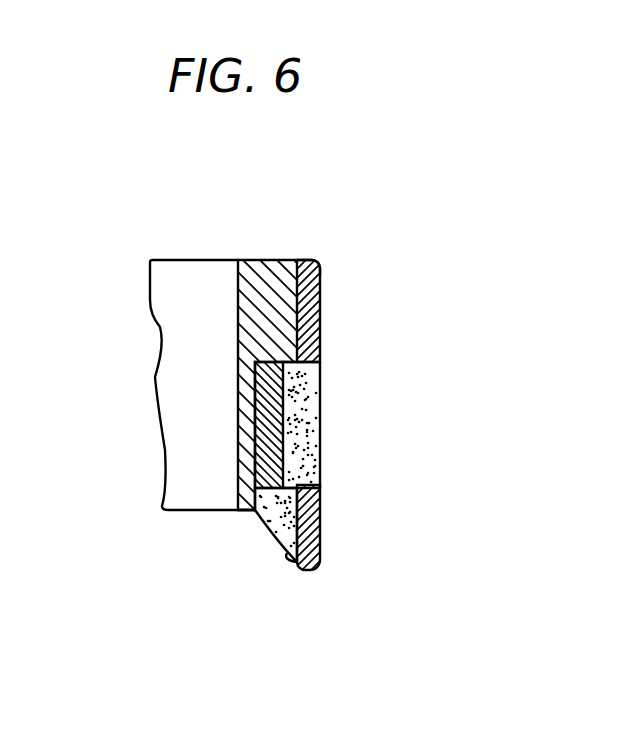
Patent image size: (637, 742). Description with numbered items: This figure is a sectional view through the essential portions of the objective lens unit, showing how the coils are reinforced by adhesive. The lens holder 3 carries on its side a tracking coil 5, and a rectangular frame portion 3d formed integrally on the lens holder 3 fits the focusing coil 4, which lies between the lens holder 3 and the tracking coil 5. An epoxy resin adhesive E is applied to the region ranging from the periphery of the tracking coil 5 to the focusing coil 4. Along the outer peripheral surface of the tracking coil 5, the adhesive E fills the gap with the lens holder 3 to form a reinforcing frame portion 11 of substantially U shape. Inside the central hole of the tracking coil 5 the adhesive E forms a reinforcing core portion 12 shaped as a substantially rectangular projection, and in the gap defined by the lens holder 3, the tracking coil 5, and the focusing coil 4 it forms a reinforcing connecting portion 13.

The lens holder 3 is at (262, 260).
The rectangular frame portion 3d is at (248, 512).
The focusing coil 4 is at (262, 410).
The tracking coil 5 is at (320, 318).
The reinforcing frame portion 11 is at (310, 266).
The reinforcing core portion 12 is at (318, 418).
The reinforcing connecting portion 13 is at (273, 540).
The epoxy resin adhesive E is at (283, 556).